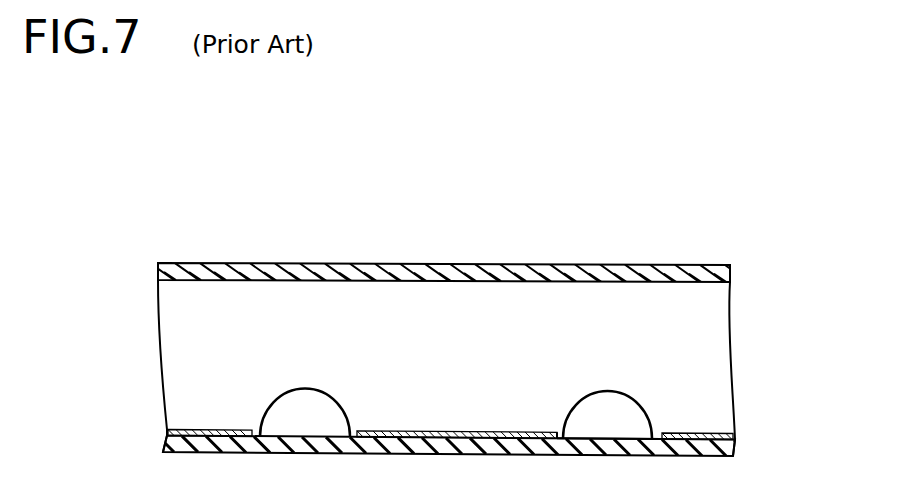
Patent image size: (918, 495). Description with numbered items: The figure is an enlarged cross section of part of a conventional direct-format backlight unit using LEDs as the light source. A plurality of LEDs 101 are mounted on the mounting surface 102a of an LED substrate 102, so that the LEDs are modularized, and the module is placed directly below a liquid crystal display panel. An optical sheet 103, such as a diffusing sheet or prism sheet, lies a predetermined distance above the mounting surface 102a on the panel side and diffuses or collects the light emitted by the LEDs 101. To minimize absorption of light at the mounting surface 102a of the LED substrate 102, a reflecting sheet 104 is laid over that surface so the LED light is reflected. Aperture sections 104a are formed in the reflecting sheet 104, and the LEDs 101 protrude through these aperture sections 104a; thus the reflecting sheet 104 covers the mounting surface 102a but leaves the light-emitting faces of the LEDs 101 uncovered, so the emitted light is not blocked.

The LED 101 is at (610, 400).
The LED substrate 102 is at (737, 447).
The mounting surface 102a is at (700, 438).
The optical sheet 103 is at (728, 275).
The reflecting sheet 104 is at (734, 437).
The aperture section 104a is at (556, 432).